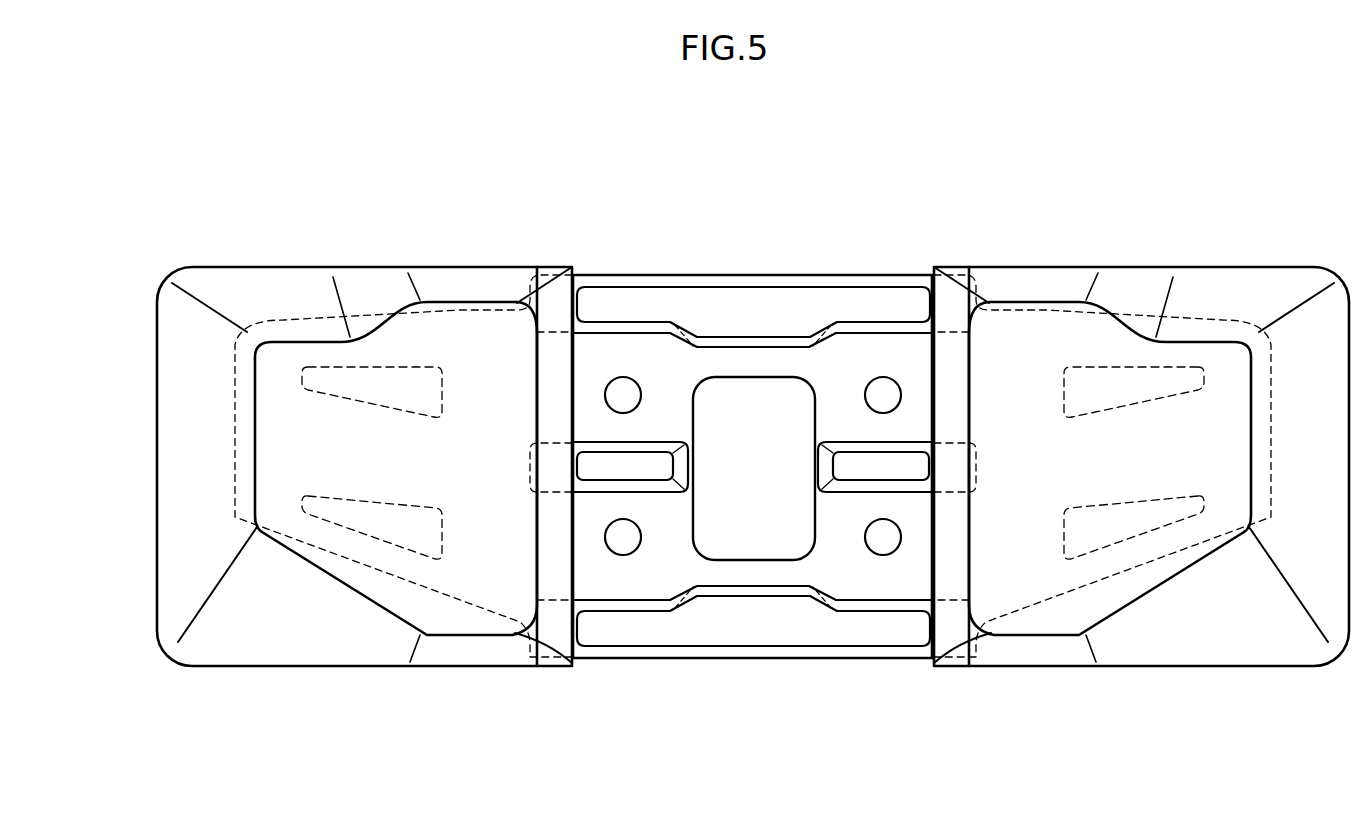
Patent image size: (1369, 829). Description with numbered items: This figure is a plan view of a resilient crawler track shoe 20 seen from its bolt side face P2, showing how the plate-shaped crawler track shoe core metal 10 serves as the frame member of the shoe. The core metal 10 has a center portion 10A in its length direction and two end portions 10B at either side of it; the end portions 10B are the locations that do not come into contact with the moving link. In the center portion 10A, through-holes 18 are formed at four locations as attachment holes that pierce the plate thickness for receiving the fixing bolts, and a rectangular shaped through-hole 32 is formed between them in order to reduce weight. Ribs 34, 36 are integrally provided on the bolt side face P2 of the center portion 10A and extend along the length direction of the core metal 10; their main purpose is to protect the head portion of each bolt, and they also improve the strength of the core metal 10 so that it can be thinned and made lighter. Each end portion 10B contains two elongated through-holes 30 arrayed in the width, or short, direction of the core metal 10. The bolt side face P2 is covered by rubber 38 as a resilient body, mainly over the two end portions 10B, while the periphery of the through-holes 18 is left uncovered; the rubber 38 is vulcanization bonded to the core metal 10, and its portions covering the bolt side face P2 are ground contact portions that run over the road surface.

The crawler track shoe core metal 10 is at (917, 245).
The center portion 10A is at (757, 275).
The end portions 10B is at (287, 320).
The through-holes 18 is at (606, 400).
The resilient crawler track shoe 20 is at (1064, 195).
The through-holes 30 is at (380, 370).
The rectangular shaped through-hole 32 is at (693, 508).
The rib 34 is at (843, 467).
The rib 36 is at (820, 300).
The rubber 38 is at (235, 666).
The bolt side face P2 is at (877, 588).